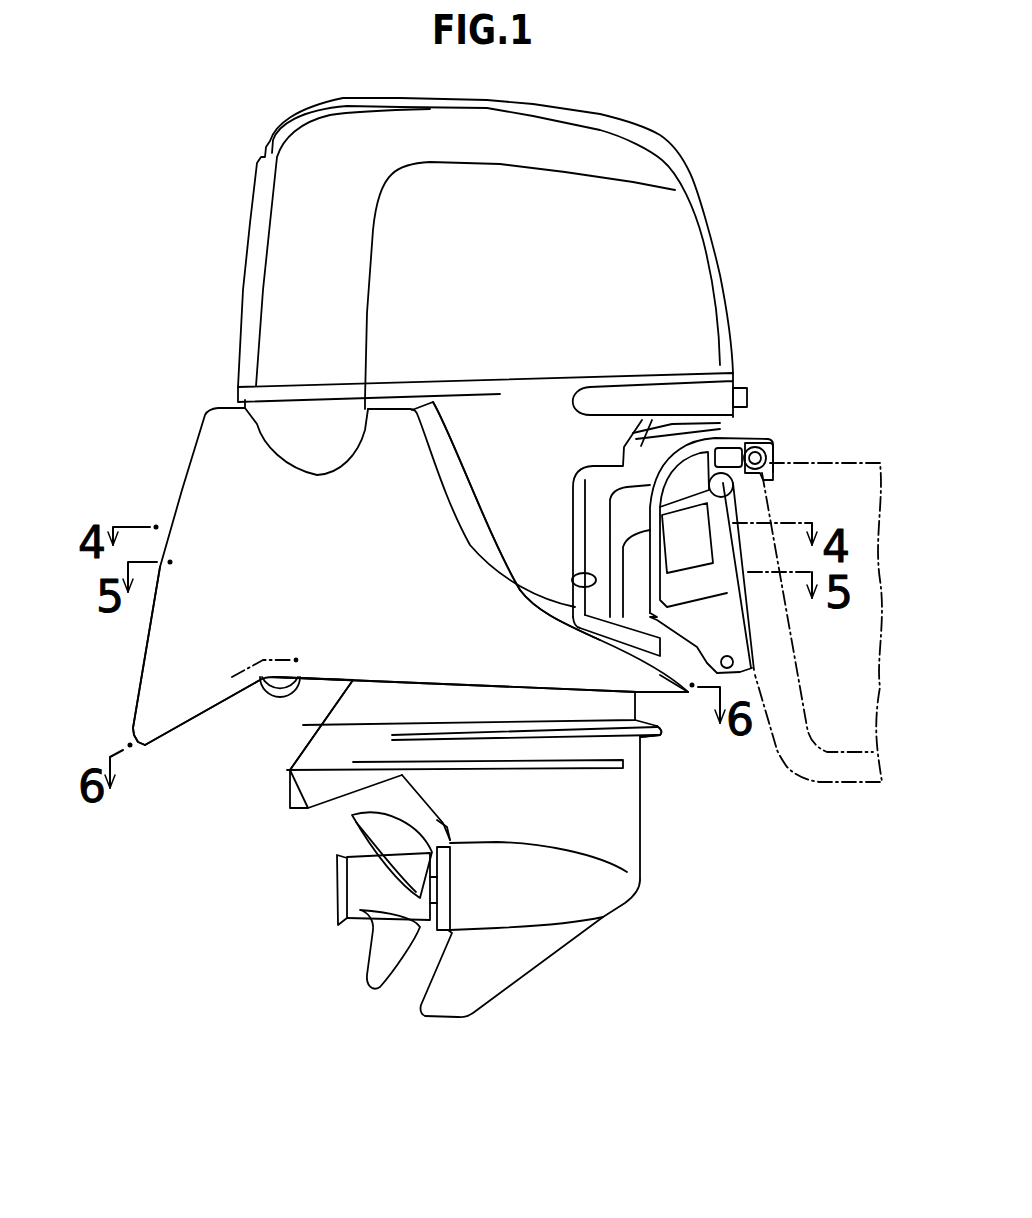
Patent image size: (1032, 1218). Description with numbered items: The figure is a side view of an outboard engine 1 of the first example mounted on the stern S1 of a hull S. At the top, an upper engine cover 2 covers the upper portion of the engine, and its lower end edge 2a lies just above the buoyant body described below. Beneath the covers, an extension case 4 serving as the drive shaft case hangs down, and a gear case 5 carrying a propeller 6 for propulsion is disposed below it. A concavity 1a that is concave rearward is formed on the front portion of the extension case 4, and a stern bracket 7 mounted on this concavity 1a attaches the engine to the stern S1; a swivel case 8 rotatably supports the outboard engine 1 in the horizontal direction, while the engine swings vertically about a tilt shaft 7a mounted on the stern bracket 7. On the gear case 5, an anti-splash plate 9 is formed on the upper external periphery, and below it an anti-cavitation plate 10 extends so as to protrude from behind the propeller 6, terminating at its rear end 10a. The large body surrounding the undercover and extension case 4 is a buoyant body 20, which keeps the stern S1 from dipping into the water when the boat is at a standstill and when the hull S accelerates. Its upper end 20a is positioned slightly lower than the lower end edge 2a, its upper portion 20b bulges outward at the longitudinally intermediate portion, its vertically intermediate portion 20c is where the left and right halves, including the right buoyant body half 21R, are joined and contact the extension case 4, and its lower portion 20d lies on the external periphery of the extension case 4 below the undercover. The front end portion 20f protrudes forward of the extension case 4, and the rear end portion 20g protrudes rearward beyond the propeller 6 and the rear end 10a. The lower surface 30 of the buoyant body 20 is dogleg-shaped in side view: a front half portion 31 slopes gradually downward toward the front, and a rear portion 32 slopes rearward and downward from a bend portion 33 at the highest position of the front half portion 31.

The outboard engine 1 is at (679, 106).
The concavity 1a is at (596, 583).
The upper engine cover 2 is at (582, 155).
The lower end edge 2a is at (498, 388).
The extension case 4 is at (336, 701).
The gear case 5 is at (616, 852).
The propeller 6 is at (368, 932).
The stern bracket 7 is at (717, 583).
The tilt shaft 7a is at (762, 451).
The swivel case 8 is at (593, 513).
The anti-splash plate 9 is at (653, 732).
The anti-cavitation plate 10 is at (568, 768).
The rear end of anti-cavitation plate 10a is at (287, 770).
The buoyant body 20 is at (208, 521).
The upper end of buoyant body 20a is at (391, 401).
The upper portion of buoyant body 20b is at (408, 447).
The vertically intermediate portion of buoyant body 20c is at (416, 554).
The lower portion of buoyant body 20d is at (411, 650).
The front end portion of buoyant body 20f is at (687, 695).
The rear end portion of buoyant body 20g is at (140, 750).
The right buoyant body half 21R is at (171, 652).
The lower surface of buoyant body 30 is at (500, 698).
The front half portion of lower surface 31 is at (463, 690).
The rear portion of lower surface 32 is at (197, 717).
The bend portion 33 is at (297, 687).
The hull S is at (823, 463).
The stern S1 is at (753, 498).